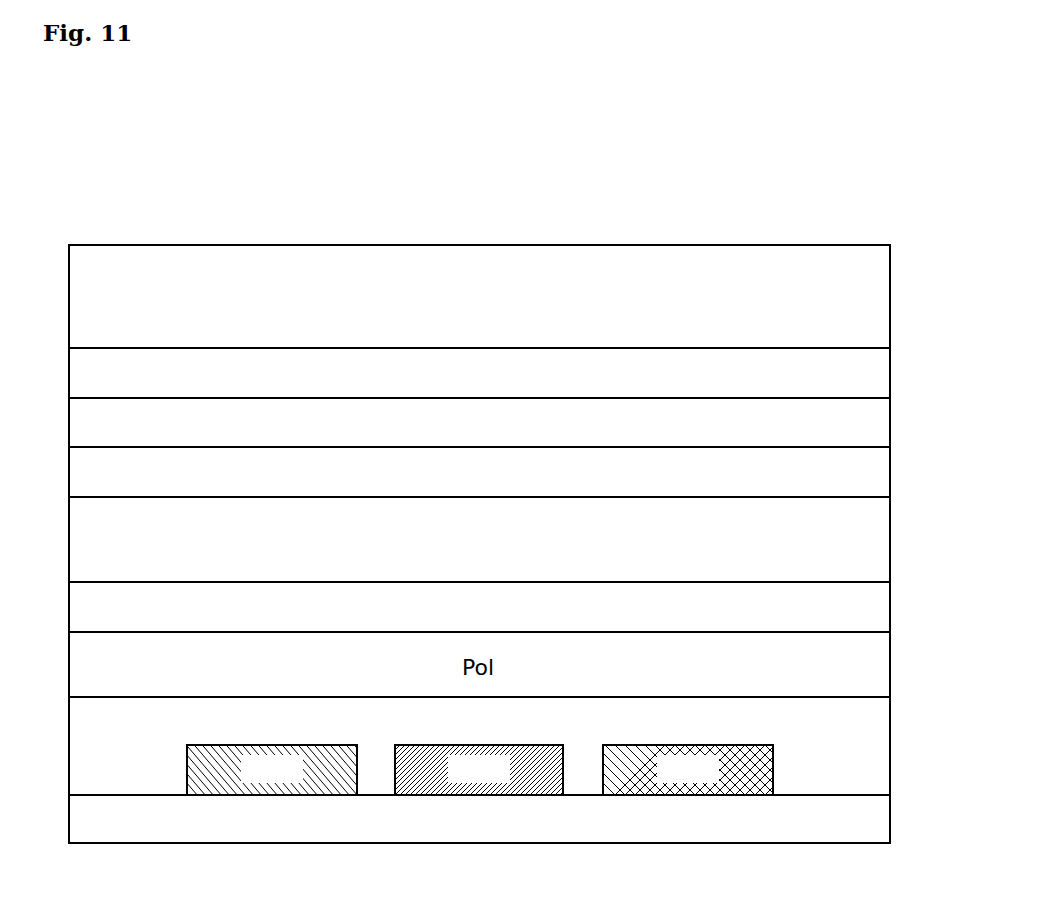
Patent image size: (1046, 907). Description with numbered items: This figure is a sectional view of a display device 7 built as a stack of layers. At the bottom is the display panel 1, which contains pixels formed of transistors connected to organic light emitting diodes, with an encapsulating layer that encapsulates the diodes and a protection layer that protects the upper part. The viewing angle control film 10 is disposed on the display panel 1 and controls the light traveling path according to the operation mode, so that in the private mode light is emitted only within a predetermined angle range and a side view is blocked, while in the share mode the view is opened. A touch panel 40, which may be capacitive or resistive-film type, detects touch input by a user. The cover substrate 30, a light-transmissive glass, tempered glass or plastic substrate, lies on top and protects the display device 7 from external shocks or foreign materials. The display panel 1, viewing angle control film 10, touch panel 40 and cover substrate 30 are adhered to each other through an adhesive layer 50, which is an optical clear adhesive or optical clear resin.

The display device 7 is at (479, 460).
The cover substrate 30 is at (891, 300).
The adhesive layer 50 is at (891, 368).
The touch panel 40 is at (891, 417).
The viewing angle control film 10 is at (891, 537).
The display panel 1 is at (891, 742).